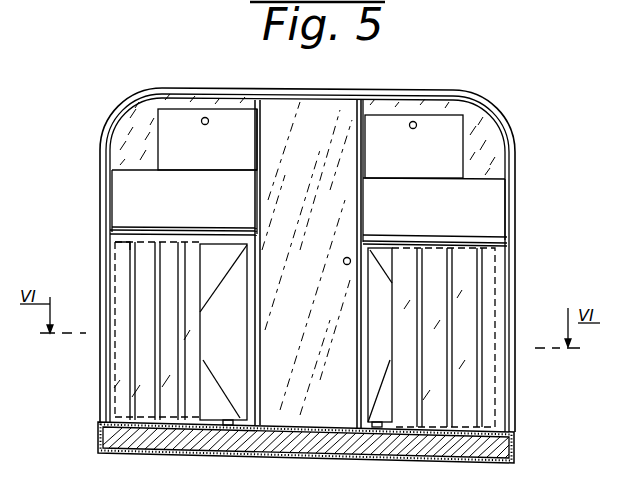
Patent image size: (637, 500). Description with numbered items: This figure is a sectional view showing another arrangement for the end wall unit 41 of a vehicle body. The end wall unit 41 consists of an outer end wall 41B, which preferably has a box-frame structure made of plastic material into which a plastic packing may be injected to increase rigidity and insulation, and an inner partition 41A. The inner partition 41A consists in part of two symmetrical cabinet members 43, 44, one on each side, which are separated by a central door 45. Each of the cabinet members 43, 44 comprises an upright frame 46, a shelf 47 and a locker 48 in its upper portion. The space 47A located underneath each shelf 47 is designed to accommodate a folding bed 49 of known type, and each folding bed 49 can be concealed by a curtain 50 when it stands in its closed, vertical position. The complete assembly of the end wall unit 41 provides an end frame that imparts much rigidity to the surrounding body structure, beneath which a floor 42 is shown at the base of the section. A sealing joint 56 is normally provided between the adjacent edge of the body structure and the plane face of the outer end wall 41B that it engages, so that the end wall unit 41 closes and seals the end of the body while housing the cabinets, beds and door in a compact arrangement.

The end wall unit 41 is at (97, 358).
The inner partition 41A is at (367, 242).
The outer end wall 41B is at (208, 460).
The floor 42 is at (345, 445).
The cabinet member 43 is at (184, 171).
The cabinet member 44 is at (435, 170).
The door 45 is at (307, 258).
The upright frame 46 is at (357, 373).
The shelf 47 is at (158, 232).
The space 47A is at (121, 245).
The locker 48 is at (222, 138).
The folding bed 49 is at (410, 477).
The curtain 50 is at (158, 259).
The sealing joint 56 is at (510, 165).